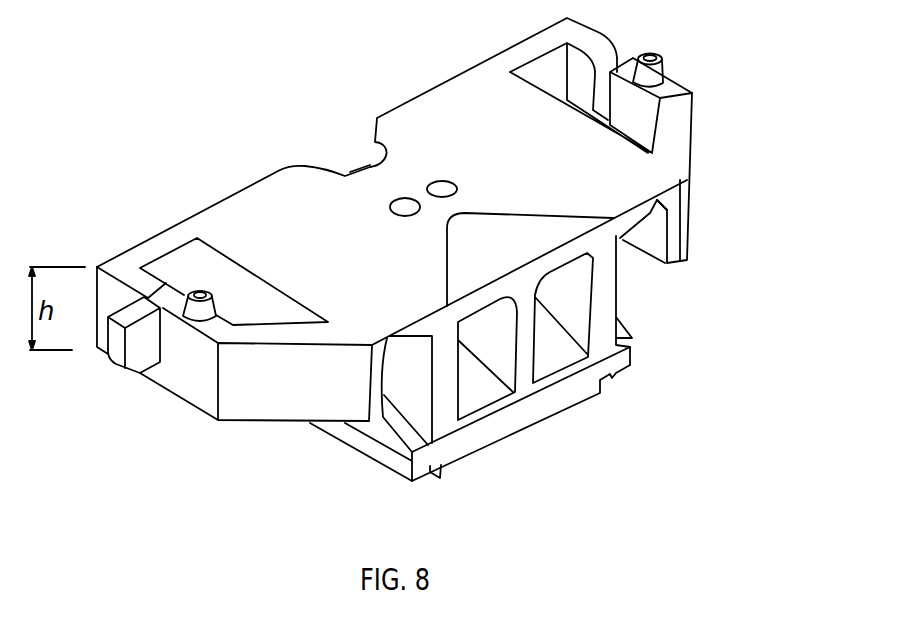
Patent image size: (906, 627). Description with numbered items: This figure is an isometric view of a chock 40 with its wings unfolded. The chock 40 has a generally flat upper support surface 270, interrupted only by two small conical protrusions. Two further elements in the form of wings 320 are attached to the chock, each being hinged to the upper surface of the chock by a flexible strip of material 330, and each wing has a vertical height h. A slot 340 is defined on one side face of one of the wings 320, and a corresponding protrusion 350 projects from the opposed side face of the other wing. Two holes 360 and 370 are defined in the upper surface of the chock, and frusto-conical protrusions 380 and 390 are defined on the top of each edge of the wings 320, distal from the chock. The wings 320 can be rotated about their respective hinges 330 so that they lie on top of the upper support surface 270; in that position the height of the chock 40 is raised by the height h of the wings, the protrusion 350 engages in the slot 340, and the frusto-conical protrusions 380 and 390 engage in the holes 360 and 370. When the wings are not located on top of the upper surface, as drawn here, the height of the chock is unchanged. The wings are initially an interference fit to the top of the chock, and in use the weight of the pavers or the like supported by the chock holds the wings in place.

The chock 40 is at (252, 471).
The upper support surface 270 is at (432, 128).
The wings 320 is at (147, 253).
The flexible strip of material 330 is at (389, 318).
The slot 340 is at (618, 61).
The protrusion 350 is at (143, 353).
The hole 360 is at (393, 200).
The hole 370 is at (437, 183).
The frusto-conical protrusion 380 is at (197, 291).
The frusto-conical protrusion 390 is at (661, 68).